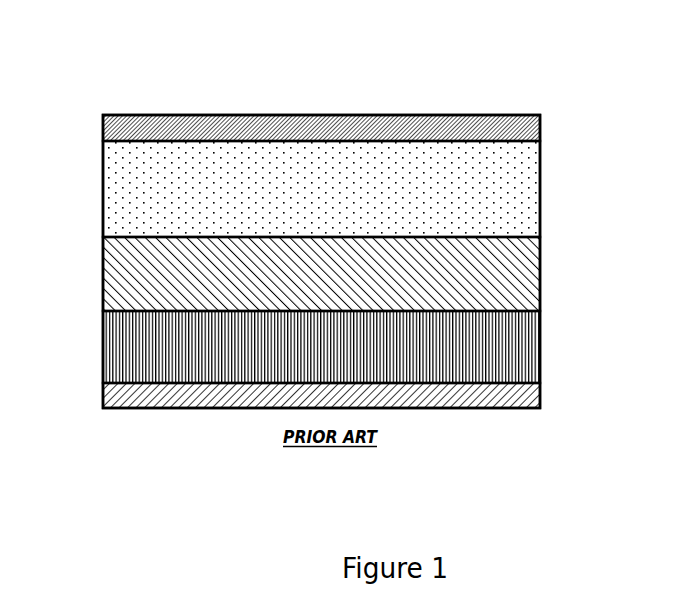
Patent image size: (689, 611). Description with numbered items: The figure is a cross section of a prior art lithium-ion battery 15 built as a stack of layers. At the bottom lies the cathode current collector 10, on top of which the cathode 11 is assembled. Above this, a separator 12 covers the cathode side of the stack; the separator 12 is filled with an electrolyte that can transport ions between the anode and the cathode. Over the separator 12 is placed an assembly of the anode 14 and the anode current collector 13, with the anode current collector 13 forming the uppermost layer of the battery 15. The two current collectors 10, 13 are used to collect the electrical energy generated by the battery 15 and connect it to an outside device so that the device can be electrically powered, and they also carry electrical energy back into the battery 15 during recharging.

The cathode current collector 10 is at (143, 402).
The cathode 11 is at (118, 339).
The separator 12 is at (523, 272).
The anode current collector 13 is at (481, 125).
The anode 14 is at (122, 190).
The battery 15 is at (212, 453).